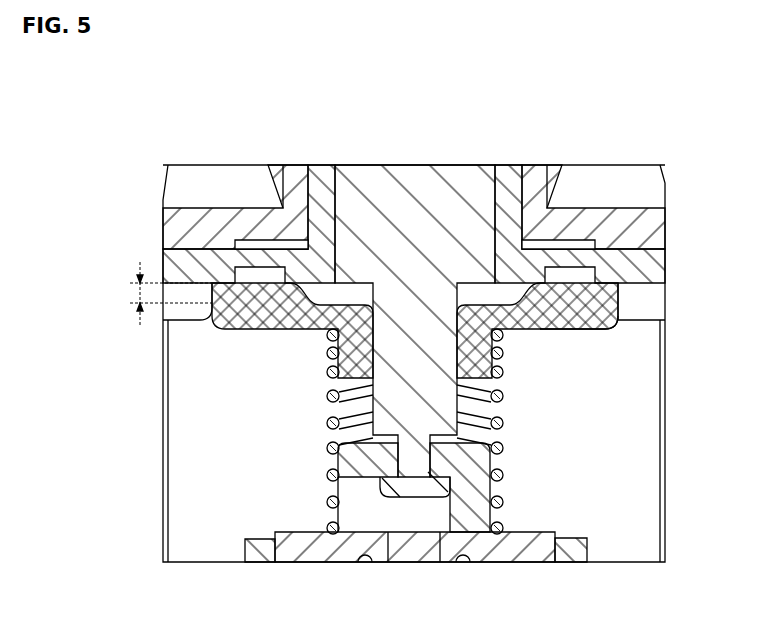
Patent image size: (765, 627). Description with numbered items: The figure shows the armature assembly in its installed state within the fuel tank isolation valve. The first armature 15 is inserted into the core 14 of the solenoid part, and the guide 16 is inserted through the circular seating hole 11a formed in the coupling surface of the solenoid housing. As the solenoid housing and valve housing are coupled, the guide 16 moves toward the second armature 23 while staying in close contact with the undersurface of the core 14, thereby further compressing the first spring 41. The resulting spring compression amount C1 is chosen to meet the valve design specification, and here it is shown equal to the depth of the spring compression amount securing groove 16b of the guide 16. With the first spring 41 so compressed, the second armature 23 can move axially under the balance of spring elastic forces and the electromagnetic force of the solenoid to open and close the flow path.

The seating hole 11a is at (620, 310).
The core 14 is at (505, 192).
The first armature 15 is at (401, 200).
The guide 16 is at (596, 331).
The spring compression amount securing groove 16b is at (585, 336).
The first spring 41 is at (503, 423).
The second armature 23 is at (470, 508).
The spring compression amount C1 is at (161, 293).